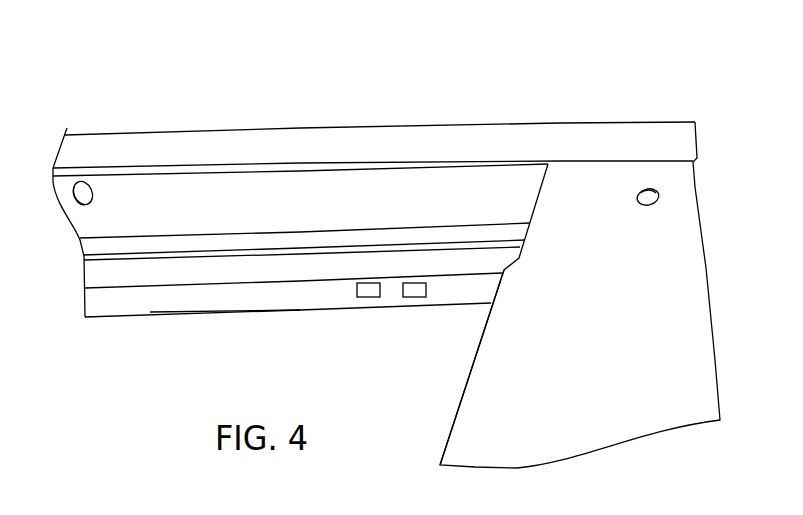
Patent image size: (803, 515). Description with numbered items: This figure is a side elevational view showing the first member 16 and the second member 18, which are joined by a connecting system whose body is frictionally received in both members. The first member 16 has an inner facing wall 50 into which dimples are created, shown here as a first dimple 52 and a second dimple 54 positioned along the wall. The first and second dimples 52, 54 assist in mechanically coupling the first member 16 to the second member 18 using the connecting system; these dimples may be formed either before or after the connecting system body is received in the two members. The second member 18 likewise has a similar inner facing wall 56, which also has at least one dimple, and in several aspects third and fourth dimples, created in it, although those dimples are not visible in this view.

The first member 16 is at (450, 140).
The second member 18 is at (593, 183).
The inner facing wall 50 is at (232, 310).
The first dimple 52 is at (365, 308).
The second dimple 54 is at (413, 308).
The inner facing wall 56 is at (450, 404).